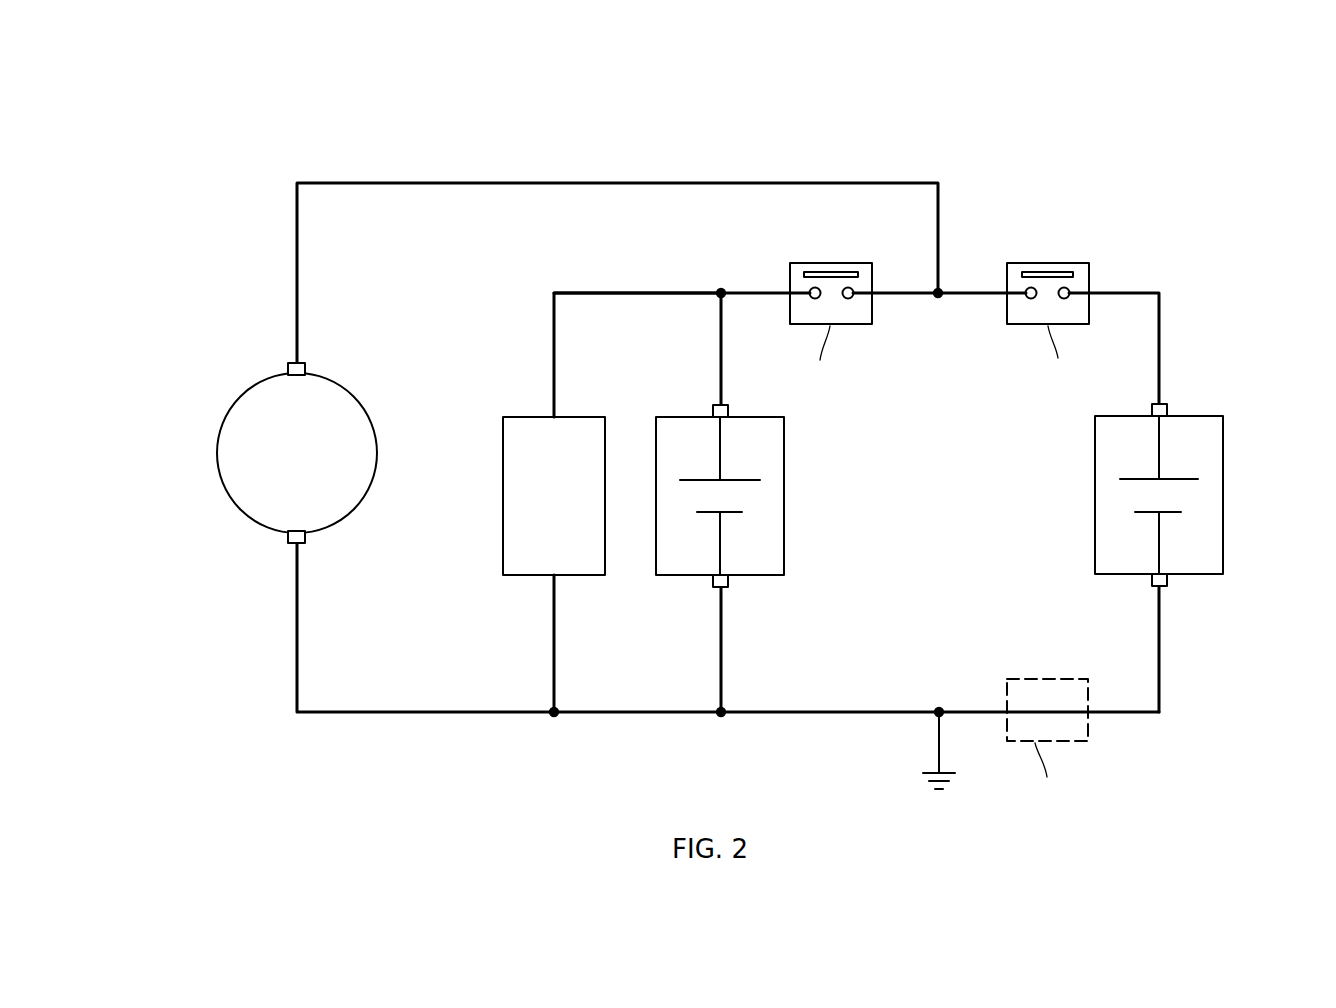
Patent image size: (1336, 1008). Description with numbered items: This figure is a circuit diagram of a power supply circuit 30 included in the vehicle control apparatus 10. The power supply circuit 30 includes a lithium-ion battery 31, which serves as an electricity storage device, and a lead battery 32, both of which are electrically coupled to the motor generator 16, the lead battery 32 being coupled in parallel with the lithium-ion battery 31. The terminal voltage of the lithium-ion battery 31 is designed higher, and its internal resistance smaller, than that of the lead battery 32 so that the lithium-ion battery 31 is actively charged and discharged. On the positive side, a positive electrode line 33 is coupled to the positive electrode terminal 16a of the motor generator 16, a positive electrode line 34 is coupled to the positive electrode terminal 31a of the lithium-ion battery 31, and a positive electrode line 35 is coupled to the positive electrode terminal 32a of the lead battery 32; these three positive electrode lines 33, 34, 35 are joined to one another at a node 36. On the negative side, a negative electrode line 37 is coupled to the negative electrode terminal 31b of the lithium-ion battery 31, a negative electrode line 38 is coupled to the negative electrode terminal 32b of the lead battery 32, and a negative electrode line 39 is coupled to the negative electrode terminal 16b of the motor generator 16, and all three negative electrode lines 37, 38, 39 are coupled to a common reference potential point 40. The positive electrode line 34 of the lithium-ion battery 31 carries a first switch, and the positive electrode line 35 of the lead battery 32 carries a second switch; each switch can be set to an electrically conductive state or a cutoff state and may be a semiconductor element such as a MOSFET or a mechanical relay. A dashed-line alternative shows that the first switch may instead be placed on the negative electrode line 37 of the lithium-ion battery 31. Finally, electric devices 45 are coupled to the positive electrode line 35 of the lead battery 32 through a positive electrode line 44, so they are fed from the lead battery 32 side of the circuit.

The vehicle control apparatus 10 is at (200, 113).
The power supply circuit 30 is at (243, 188).
The motor generator 16 is at (373, 427).
The positive electrode terminal 16a is at (293, 362).
The negative electrode terminal 16b is at (293, 545).
The lithium-ion battery 31 is at (1223, 495).
The positive electrode terminal 31a is at (1167, 410).
The negative electrode terminal 31b is at (1167, 582).
The lead battery 32 is at (785, 495).
The positive electrode terminal 32a is at (713, 403).
The negative electrode terminal 32b is at (712, 583).
The positive electrode line 33 is at (573, 182).
The positive electrode line 34 is at (970, 290).
The positive electrode line 35 is at (755, 292).
The node 36 is at (938, 300).
The negative electrode line 37 is at (1113, 708).
The negative electrode line 38 is at (722, 645).
The negative electrode line 39 is at (295, 670).
The reference potential point 40 is at (937, 714).
The positive electrode line 44 is at (617, 292).
The electric devices 45 is at (503, 497).